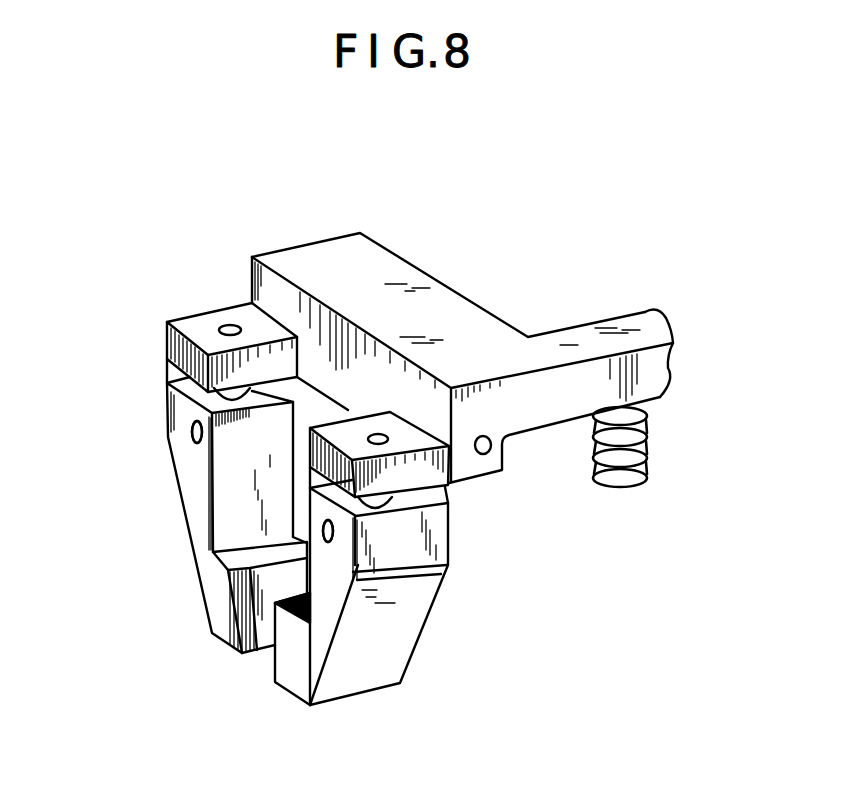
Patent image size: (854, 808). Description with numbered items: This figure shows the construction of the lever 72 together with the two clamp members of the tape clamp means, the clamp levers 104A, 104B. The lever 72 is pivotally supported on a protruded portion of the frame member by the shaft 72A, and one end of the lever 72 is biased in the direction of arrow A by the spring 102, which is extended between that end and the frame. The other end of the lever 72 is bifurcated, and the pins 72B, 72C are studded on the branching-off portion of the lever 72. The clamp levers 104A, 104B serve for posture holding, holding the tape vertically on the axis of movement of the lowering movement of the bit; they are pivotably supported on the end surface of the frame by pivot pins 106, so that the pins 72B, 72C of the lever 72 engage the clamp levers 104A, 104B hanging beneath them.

The lever 72 is at (452, 300).
The shaft 72A is at (492, 446).
The pin 72B is at (387, 508).
The pin 72C is at (177, 382).
The spring 102 is at (648, 443).
The clamp lever 104A is at (185, 503).
The clamp lever 104B is at (385, 668).
The pivot pin 106 is at (192, 432).